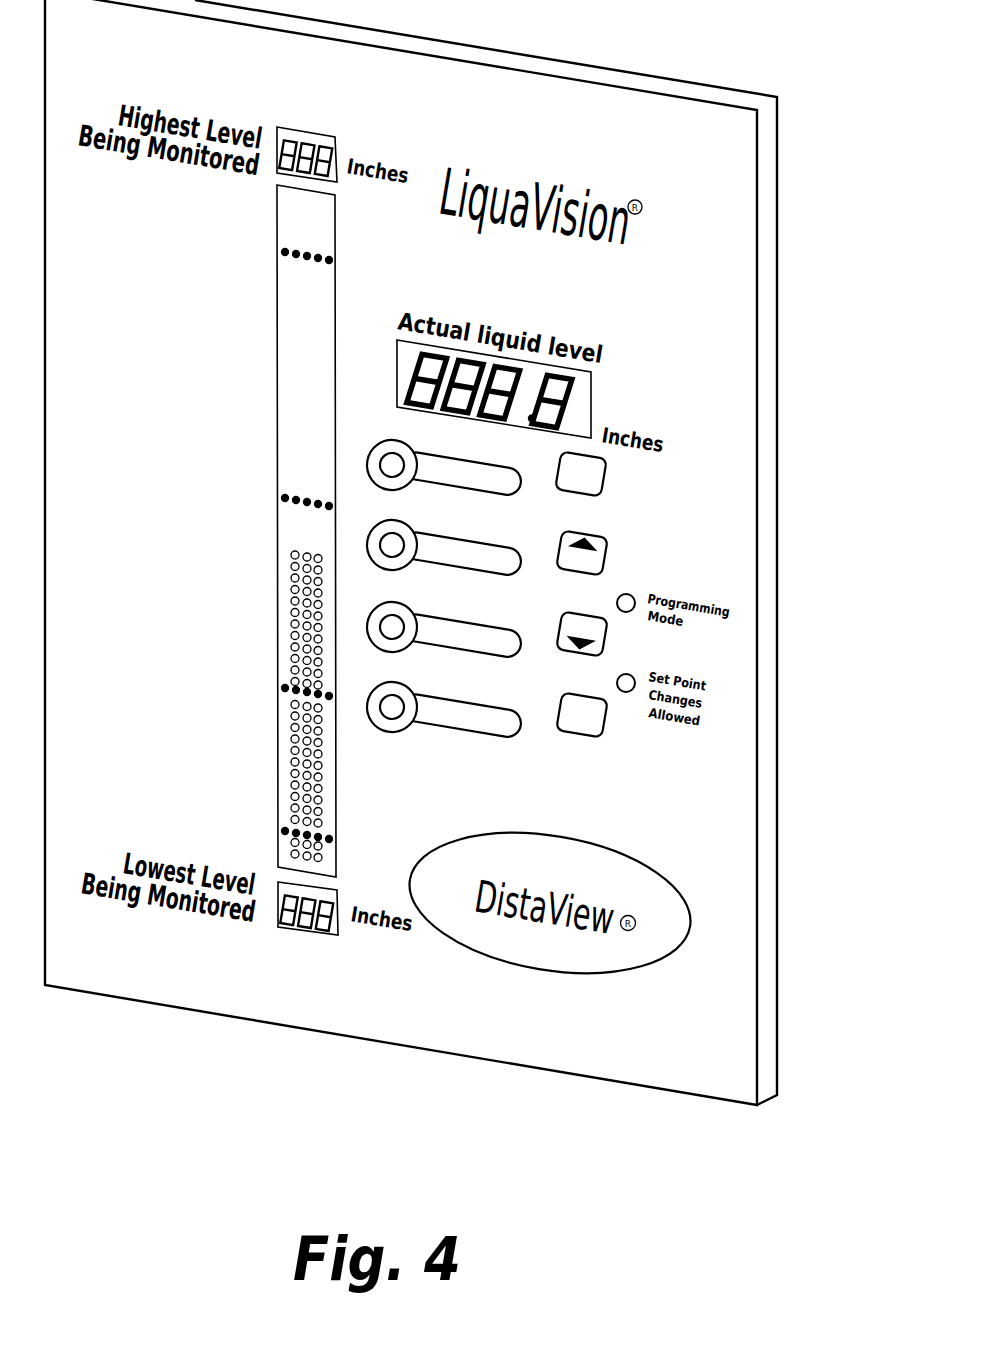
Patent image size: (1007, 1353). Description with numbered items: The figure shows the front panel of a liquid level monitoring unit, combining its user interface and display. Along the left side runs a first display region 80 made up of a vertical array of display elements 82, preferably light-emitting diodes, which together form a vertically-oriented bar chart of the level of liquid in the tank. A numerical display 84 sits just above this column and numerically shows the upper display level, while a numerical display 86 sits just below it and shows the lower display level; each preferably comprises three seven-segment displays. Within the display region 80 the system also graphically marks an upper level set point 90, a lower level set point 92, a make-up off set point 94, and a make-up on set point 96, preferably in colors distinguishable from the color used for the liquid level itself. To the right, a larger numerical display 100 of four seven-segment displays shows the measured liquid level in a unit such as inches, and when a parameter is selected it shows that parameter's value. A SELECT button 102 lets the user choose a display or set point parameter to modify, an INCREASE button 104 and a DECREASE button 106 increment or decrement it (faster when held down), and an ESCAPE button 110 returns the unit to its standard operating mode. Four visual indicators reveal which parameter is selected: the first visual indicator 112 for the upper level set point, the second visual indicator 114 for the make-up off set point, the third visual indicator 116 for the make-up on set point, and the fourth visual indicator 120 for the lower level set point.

The first display region 80 is at (277, 352).
The display elements 82 is at (290, 557).
The numerical display 84 is at (333, 137).
The numerical display 86 is at (327, 935).
The upper level set point 90 is at (277, 252).
The lower level set point 92 is at (335, 839).
The make-up off set point 94 is at (277, 497).
The make-up on set point 96 is at (278, 683).
The numerical display 100 is at (593, 395).
The SELECT button 102 is at (604, 487).
The INCREASE button 104 is at (607, 560).
The DECREASE button 106 is at (607, 641).
The ESCAPE button 110 is at (607, 731).
The first visual indicator 112 is at (367, 461).
The second visual indicator 114 is at (367, 542).
The third visual indicator 116 is at (367, 626).
The fourth visual indicator 120 is at (370, 722).